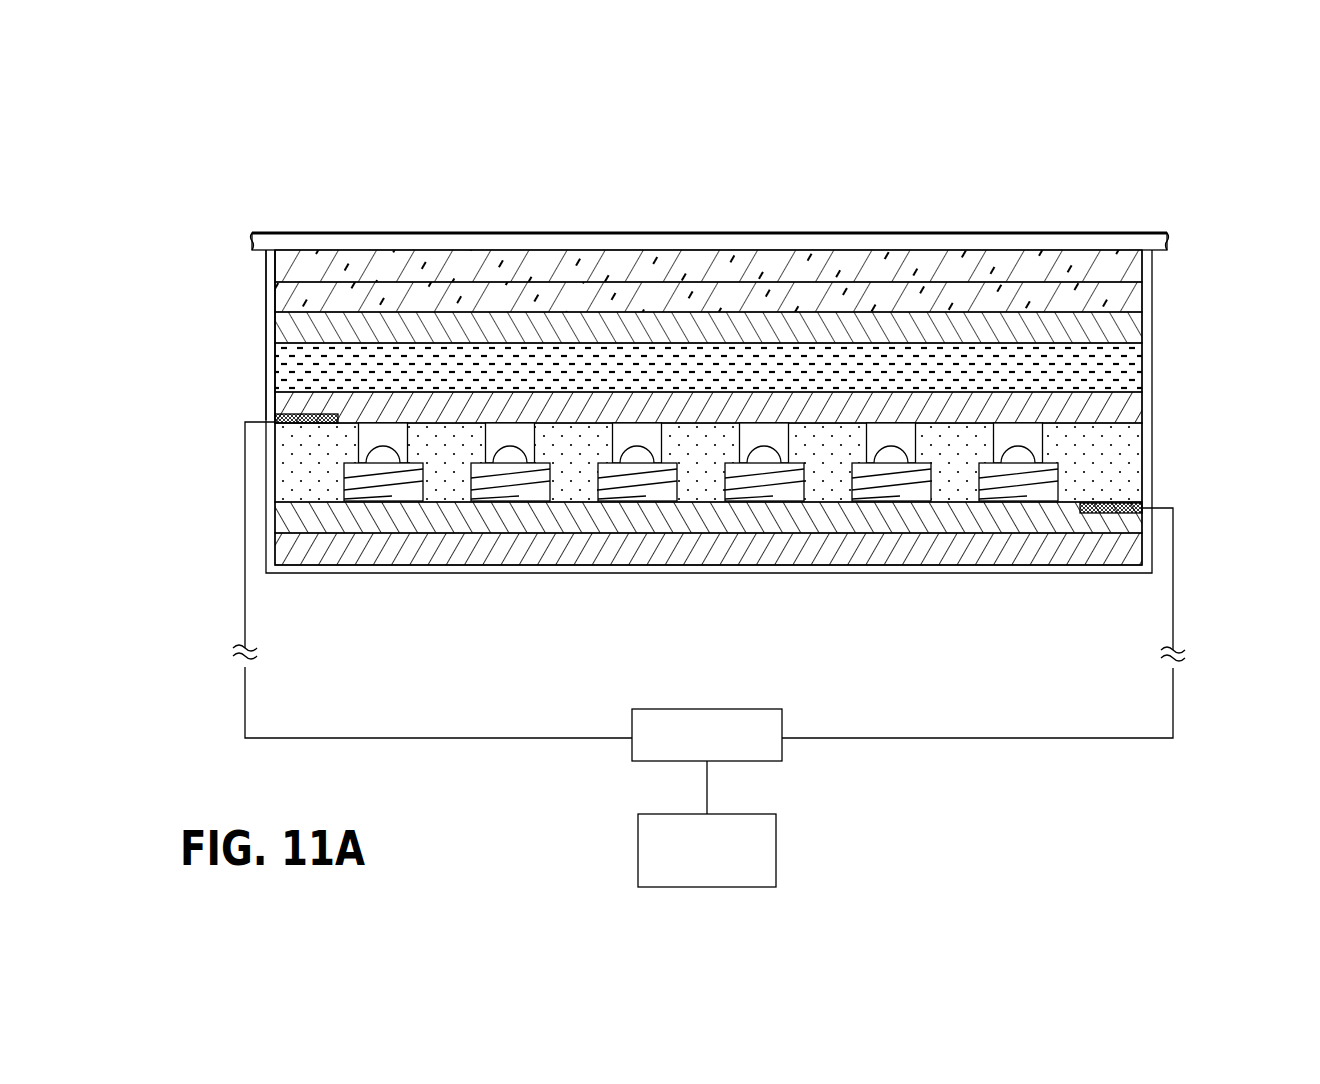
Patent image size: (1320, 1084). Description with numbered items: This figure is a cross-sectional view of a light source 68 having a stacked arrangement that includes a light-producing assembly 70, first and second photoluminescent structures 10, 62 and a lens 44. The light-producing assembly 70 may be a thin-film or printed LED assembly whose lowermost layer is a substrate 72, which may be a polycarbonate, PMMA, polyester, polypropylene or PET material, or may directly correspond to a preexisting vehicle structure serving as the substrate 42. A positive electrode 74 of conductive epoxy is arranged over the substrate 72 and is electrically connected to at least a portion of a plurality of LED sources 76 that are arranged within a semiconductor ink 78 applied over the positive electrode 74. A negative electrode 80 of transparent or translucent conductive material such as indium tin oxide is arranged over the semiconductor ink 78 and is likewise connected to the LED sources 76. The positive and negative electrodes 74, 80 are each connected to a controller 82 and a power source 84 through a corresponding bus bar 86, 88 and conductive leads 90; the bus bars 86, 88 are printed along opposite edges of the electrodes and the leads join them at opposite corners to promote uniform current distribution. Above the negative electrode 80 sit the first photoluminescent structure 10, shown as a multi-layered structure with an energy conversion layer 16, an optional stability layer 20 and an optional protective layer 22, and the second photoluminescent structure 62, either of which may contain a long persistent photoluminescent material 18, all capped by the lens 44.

The light source 68 is at (986, 140).
The lens 44 is at (1022, 232).
The substrate 42 is at (1150, 250).
The second photoluminescent structure 62 is at (268, 267).
The first photoluminescent structure 10 is at (715, 322).
The protective layer 22 is at (1142, 294).
The stability layer 20 is at (1142, 330).
The energy conversion layer 16 is at (1142, 362).
The long persistent photoluminescent material 18 is at (1110, 373).
The light-producing assembly 70 is at (687, 520).
The negative electrode 80 is at (1142, 412).
The semiconductor ink 78 is at (1142, 455).
The LED sources 76 is at (397, 485).
The positive electrode 74 is at (1142, 522).
The substrate 72 is at (1142, 555).
The bus bar 88 is at (275, 422).
The bus bar 86 is at (1142, 507).
The conductive leads 90 is at (245, 612).
The controller 82 is at (782, 750).
The power source 84 is at (776, 833).